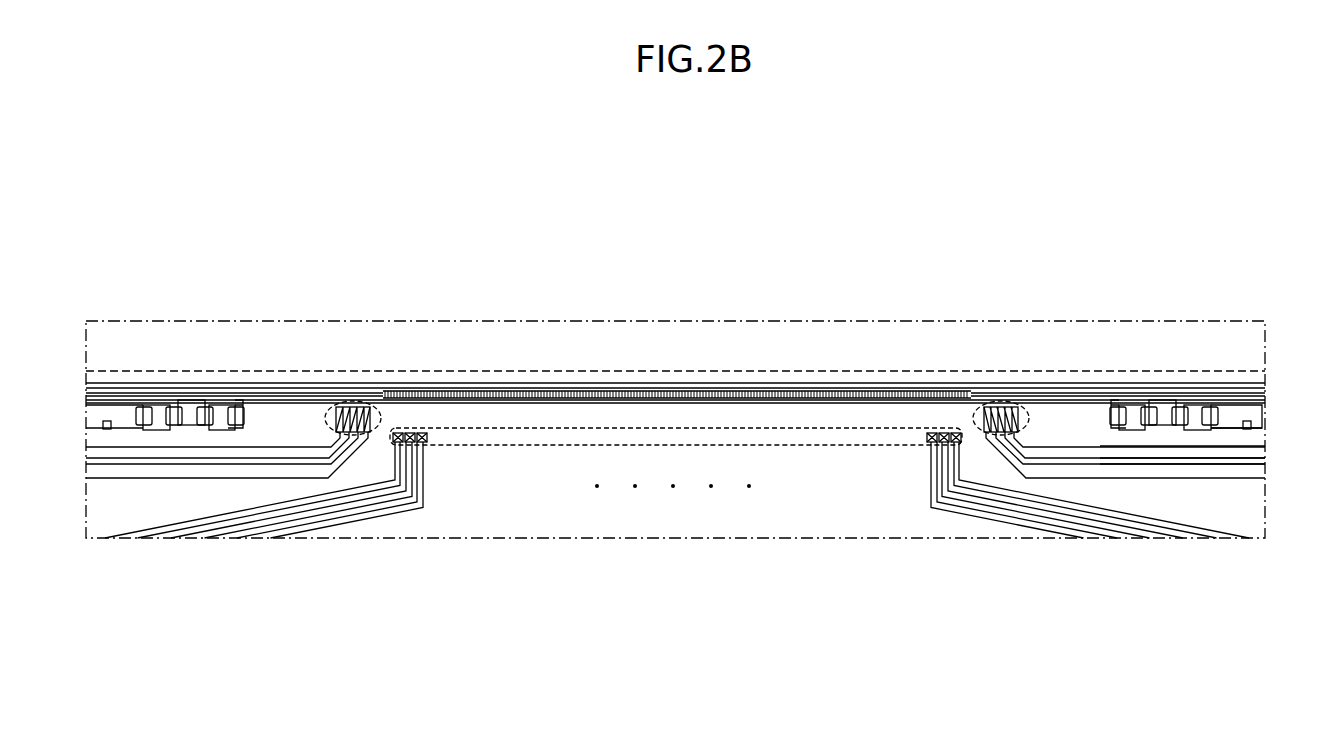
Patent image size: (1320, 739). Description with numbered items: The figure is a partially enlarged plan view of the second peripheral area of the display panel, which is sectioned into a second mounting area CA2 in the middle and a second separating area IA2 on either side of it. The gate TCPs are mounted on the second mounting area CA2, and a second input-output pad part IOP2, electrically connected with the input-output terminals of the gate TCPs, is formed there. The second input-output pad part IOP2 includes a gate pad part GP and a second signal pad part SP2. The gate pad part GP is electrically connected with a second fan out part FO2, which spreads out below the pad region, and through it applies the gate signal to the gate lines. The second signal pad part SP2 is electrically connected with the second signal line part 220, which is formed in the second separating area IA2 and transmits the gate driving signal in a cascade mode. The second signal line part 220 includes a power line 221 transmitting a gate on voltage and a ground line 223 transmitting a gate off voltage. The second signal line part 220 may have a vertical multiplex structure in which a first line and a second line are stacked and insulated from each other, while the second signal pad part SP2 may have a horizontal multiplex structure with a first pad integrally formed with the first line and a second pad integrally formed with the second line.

The second separating area IA2 is at (1028, 358).
The second mounting area CA2 is at (1028, 228).
The second input-output pad part IOP2 is at (365, 297).
The second signal pad part SP2 is at (380, 419).
The gate pad part GP is at (707, 428).
The second signal line part 220 is at (1199, 357).
The power line 221 is at (1236, 438).
The ground line 223 is at (1262, 470).
The second fan out part FO2 is at (1265, 620).